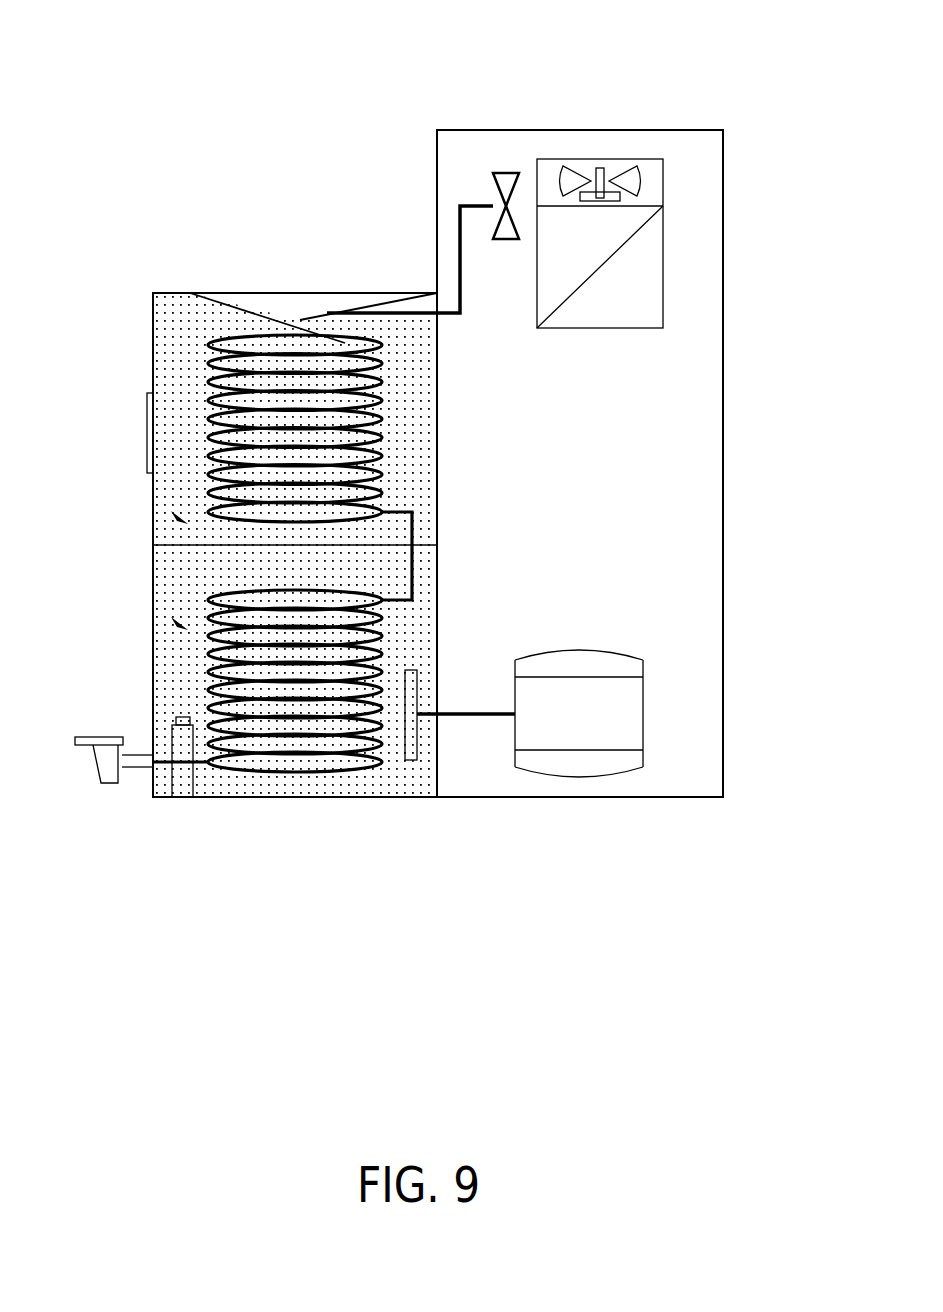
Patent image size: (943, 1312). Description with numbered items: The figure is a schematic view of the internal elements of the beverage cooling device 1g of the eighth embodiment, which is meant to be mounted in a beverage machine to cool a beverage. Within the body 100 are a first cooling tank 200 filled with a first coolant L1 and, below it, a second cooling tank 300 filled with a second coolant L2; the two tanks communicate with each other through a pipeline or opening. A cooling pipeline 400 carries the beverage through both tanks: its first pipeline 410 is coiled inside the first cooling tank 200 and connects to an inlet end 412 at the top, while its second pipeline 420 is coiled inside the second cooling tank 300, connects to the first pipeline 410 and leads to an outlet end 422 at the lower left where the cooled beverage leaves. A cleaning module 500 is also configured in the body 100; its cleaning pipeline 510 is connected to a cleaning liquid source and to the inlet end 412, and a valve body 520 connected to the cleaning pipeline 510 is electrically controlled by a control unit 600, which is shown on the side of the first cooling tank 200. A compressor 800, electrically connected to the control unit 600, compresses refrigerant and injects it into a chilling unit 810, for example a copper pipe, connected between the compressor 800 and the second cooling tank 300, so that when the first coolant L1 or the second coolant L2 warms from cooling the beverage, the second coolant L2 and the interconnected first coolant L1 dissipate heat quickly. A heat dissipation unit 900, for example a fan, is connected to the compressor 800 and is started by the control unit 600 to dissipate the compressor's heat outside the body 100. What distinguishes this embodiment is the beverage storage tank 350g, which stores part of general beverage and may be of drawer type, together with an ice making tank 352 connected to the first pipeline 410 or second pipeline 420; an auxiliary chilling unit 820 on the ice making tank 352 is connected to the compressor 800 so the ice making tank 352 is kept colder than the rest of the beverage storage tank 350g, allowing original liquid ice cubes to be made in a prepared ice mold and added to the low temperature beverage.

The beverage cooling device 1g is at (78, 49).
The body 100 is at (691, 295).
The first cooling tank 200 is at (440, 458).
The second cooling tank 300 is at (440, 625).
The beverage storage tank 350g is at (183, 783).
The ice making tank 352 is at (178, 735).
The cooling pipeline 400 is at (337, 38).
The first pipeline 410 is at (205, 346).
The inlet end 412 is at (261, 278).
The second pipeline 420 is at (210, 600).
The outlet end 422 is at (105, 768).
The cleaning module 500 is at (339, 168).
The cleaning pipeline 510 is at (460, 232).
The valve body 520 is at (493, 182).
The control unit 600 is at (147, 420).
The compressor 800 is at (577, 755).
The chilling unit 810 is at (412, 748).
The auxiliary chilling unit 820 is at (180, 716).
The heat dissipation unit 900 is at (629, 179).
The first coolant L1 is at (180, 519).
The second coolant L2 is at (180, 625).